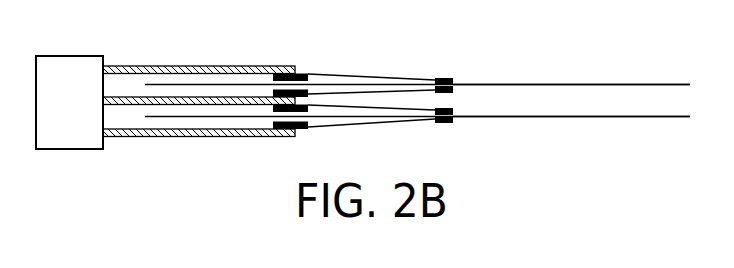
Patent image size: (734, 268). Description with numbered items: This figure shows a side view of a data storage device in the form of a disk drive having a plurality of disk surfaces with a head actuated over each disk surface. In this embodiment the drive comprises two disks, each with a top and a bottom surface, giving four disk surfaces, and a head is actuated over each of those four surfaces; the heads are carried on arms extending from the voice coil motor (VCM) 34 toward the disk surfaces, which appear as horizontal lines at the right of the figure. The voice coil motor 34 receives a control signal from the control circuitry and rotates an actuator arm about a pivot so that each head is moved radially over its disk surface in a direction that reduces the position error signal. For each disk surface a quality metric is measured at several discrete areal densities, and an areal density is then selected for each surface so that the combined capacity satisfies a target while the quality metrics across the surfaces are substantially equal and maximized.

The voice coil motor (VCM) 34 is at (68, 56).